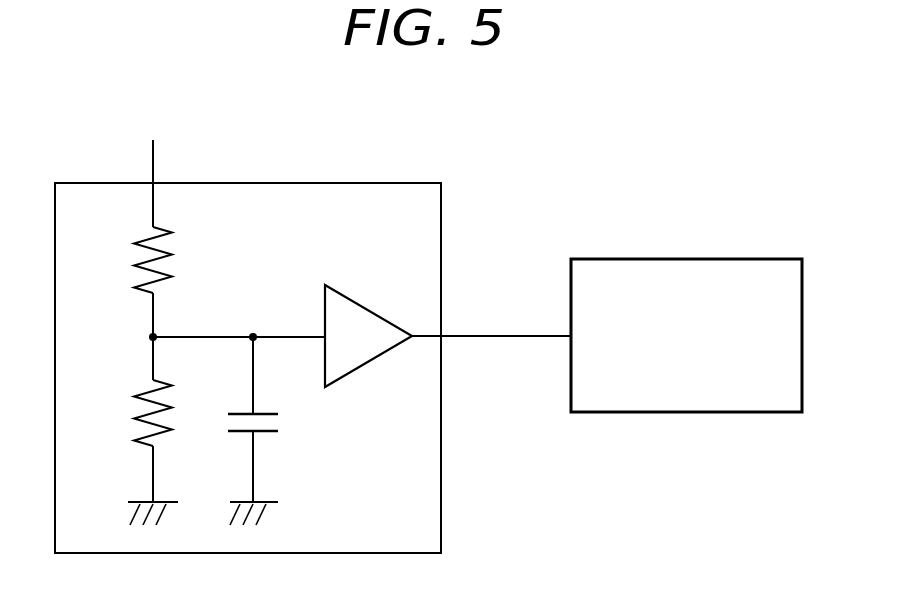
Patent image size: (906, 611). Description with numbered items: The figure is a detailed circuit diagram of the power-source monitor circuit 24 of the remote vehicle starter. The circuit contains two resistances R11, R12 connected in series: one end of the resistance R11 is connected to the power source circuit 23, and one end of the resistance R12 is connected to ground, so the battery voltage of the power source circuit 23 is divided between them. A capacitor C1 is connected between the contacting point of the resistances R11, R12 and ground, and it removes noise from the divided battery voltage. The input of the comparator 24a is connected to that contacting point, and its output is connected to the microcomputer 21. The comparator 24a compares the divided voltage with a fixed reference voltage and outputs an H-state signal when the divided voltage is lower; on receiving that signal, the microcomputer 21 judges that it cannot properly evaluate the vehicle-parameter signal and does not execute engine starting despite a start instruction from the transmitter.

The microcomputer 21 is at (733, 259).
The power source circuit 23 is at (151, 153).
The power-source monitor circuit 24 is at (355, 183).
The comparator 24a is at (365, 305).
The resistance R11 is at (126, 282).
The resistance R12 is at (129, 431).
The capacitor C1 is at (272, 431).